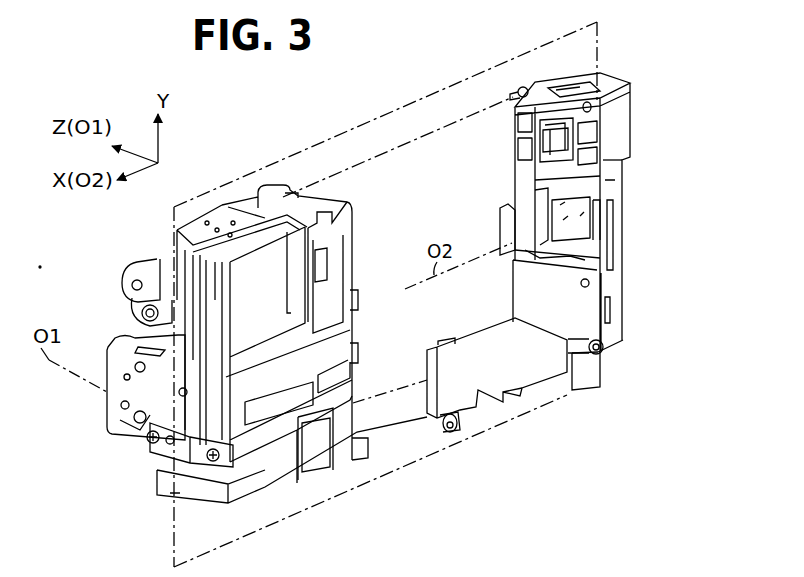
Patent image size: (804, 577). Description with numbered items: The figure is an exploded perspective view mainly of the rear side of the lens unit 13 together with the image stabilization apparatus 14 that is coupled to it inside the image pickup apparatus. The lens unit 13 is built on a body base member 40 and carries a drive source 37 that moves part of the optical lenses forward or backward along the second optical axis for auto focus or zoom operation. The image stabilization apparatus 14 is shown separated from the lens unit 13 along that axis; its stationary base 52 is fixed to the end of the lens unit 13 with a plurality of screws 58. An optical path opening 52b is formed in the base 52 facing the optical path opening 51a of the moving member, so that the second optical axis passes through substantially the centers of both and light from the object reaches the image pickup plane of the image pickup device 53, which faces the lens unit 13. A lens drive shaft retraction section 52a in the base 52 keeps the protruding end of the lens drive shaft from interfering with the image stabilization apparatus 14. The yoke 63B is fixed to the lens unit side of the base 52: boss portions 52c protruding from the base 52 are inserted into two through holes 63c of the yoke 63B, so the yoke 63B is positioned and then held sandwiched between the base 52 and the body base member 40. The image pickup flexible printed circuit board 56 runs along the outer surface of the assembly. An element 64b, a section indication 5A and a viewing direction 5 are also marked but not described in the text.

The lens unit 13 is at (272, 334).
The image stabilization apparatus 14 is at (488, 102).
The drive source 37 is at (127, 272).
The body base member 40 is at (286, 470).
The base 52 is at (630, 92).
The lens drive shaft retraction section 52a is at (574, 131).
The optical path opening 52b is at (596, 206).
The optical path opening 51a is at (669, 208).
The boss portion 52c is at (680, 232).
The image pickup device 53 is at (594, 230).
The image pickup flexible printed circuit board 56 is at (548, 378).
The screw 58 is at (528, 87).
The yoke 63B is at (587, 313).
The through hole 63c is at (612, 276).
The projection tab 64b is at (507, 222).
The cross-section plane 5A is at (523, 420).
The view direction 5 is at (524, 478).